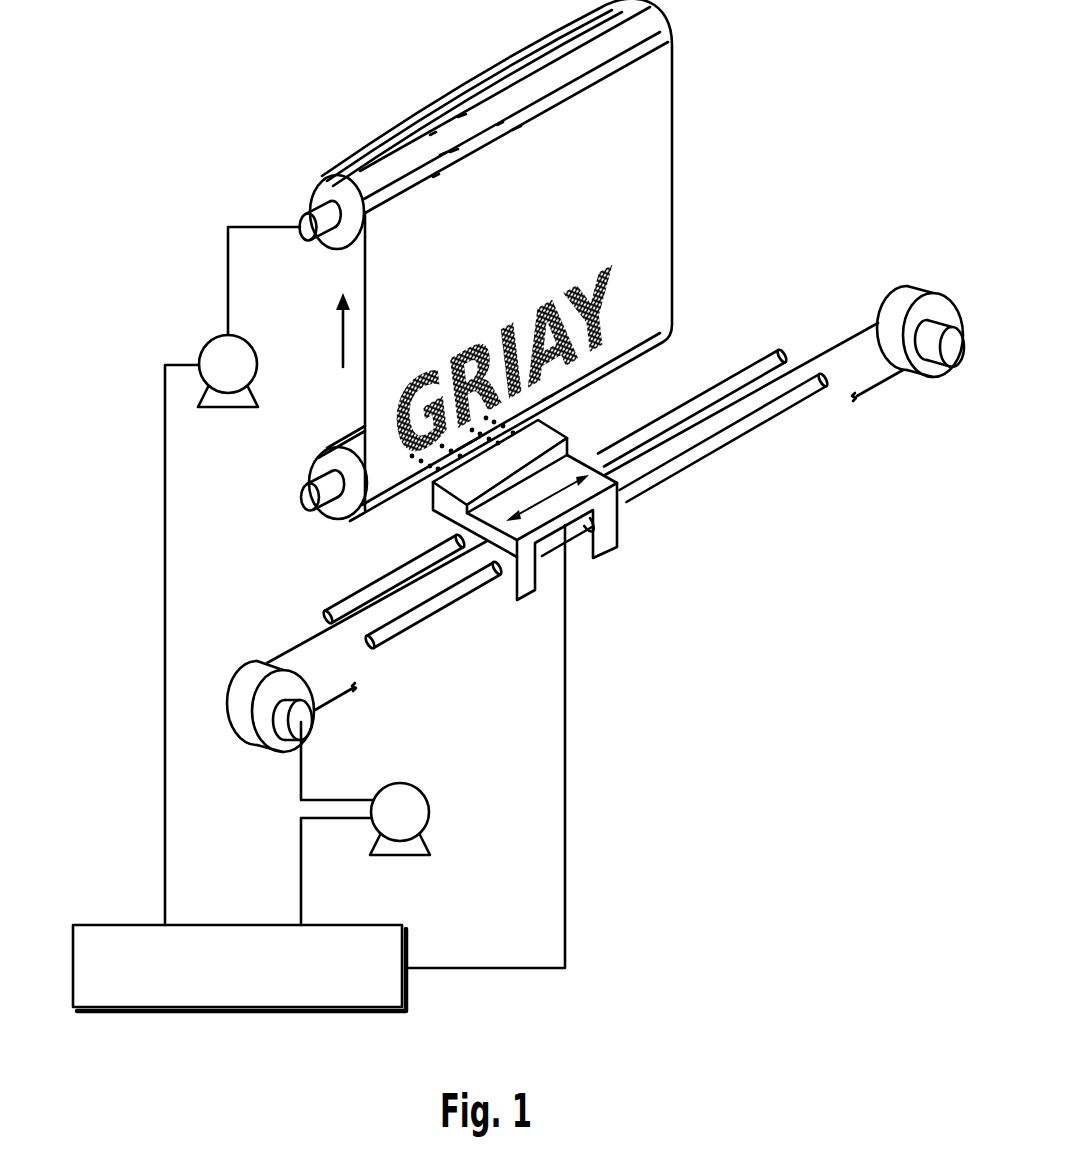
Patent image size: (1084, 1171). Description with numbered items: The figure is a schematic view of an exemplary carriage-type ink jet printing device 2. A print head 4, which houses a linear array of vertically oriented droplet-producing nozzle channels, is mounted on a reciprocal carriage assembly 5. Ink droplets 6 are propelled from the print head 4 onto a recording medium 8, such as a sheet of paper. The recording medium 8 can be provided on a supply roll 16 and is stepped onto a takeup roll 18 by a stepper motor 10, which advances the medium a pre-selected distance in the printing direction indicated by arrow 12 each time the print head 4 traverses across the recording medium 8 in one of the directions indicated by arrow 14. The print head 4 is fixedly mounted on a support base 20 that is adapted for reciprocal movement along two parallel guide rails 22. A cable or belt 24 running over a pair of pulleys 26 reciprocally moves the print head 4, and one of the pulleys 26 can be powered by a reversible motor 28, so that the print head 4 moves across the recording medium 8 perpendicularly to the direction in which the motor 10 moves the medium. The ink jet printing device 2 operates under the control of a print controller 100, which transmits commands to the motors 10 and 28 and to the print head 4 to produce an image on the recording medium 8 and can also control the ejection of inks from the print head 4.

The carriage-type ink jet printing device 2 is at (805, 248).
The print head 4 is at (433, 500).
The reciprocal carriage assembly 5 is at (638, 553).
The ink droplets 6 is at (488, 419).
The recording medium 8 is at (672, 163).
The motor 10 is at (208, 345).
The arrow 12 is at (343, 329).
The arrow 14 is at (596, 517).
The supply roll 16 is at (312, 462).
The takeup roll 18 is at (313, 178).
The support base 20 is at (447, 533).
The guide rails 22 is at (420, 627).
The cable or belt 24 is at (310, 650).
The pulleys 26 is at (267, 667).
The reversible motor 28 is at (412, 785).
The print controller 100 is at (105, 925).